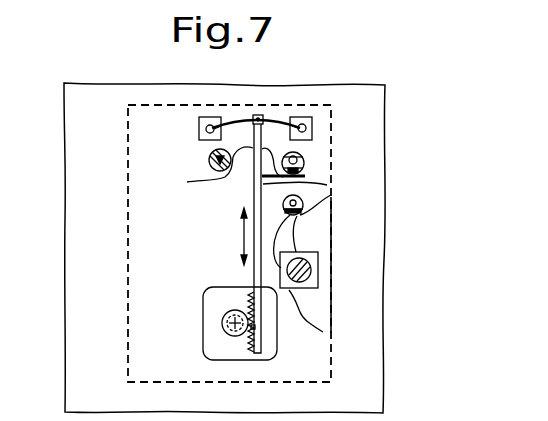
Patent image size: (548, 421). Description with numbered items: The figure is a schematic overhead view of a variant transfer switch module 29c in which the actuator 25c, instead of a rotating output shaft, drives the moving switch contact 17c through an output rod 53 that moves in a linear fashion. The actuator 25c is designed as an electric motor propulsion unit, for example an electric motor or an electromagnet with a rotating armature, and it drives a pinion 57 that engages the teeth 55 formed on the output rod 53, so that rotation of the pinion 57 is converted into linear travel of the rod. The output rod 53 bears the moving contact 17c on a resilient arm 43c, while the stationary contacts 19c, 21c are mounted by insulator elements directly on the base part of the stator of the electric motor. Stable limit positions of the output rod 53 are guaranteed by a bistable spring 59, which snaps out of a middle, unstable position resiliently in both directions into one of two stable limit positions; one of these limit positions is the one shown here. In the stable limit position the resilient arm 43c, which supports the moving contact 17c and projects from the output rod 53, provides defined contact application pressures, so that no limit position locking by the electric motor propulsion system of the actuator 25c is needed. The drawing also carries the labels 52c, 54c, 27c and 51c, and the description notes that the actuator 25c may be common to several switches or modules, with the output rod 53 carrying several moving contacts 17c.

The switch module 29c is at (120, 126).
The bistable spring 59 is at (263, 118).
The output rod 53 is at (254, 196).
The pivot pin 52c is at (209, 156).
The coupling link 54c is at (397, 245).
The stationary contact 19c is at (305, 162).
The moving switch contact 17c is at (305, 181).
The resilient arm 43c is at (327, 185).
The stationary contact 21c is at (305, 200).
The bearing 27c is at (311, 270).
The support wall 51c is at (322, 317).
The actuator 25c is at (194, 280).
The pinion 57 is at (222, 322).
The teeth 55 is at (247, 342).